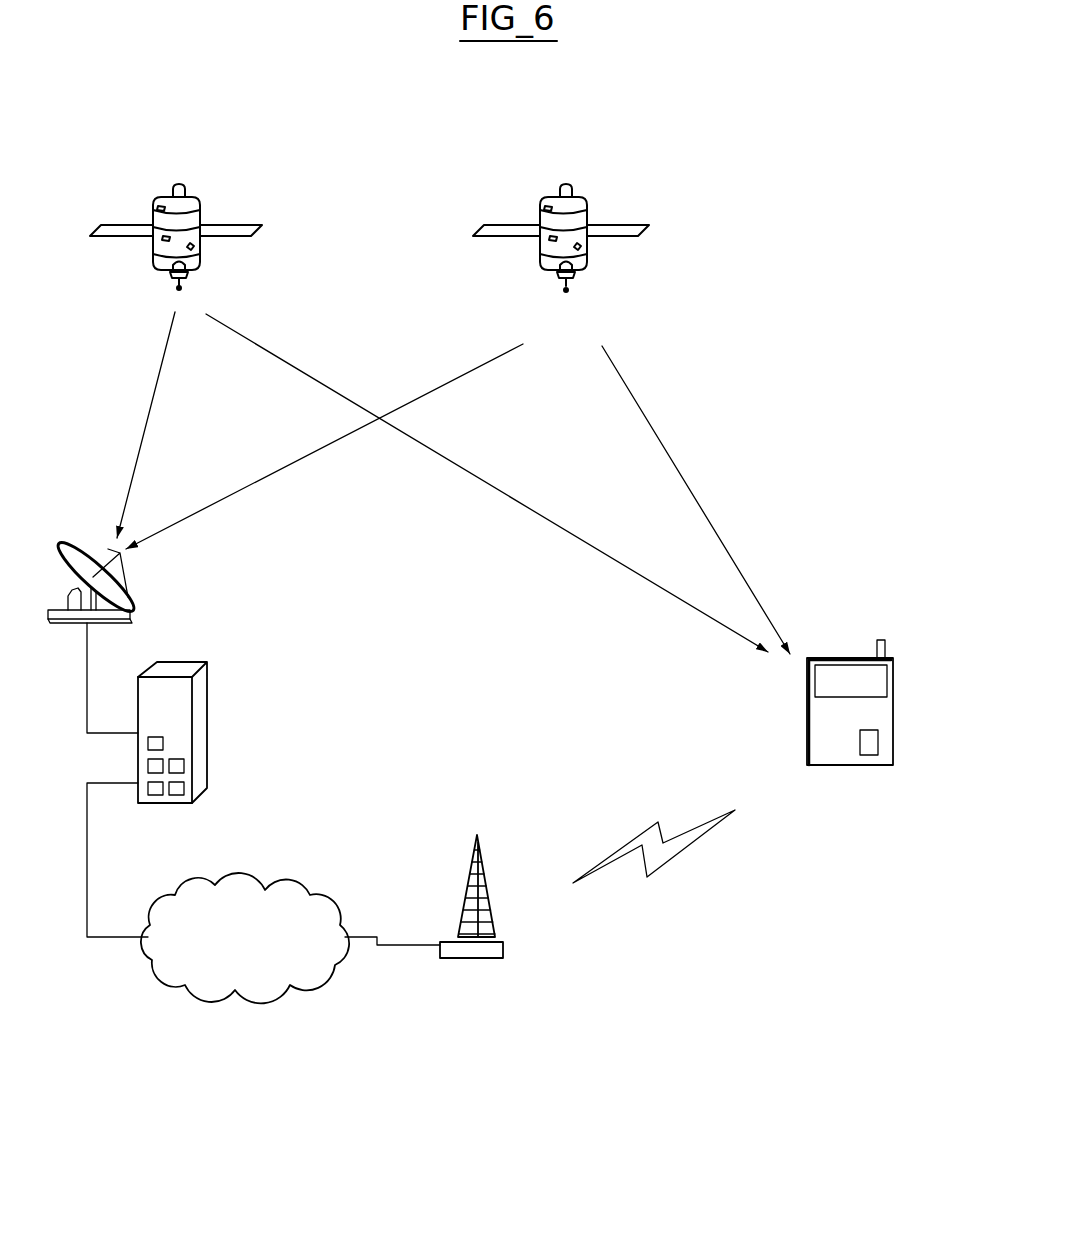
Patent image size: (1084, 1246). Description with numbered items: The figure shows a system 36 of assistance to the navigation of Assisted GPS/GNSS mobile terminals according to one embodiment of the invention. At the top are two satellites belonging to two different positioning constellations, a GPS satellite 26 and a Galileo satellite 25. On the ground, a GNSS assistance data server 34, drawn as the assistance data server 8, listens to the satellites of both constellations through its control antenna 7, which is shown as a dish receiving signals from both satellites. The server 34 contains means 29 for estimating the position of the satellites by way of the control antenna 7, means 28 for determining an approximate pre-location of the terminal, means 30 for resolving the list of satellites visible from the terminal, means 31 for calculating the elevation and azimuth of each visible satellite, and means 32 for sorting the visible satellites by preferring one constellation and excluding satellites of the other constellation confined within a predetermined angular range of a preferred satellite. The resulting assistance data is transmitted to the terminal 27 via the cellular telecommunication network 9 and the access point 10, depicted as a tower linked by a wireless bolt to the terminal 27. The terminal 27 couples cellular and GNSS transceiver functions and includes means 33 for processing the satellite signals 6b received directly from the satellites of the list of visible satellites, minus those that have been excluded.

The signal 6b is at (686, 478).
The control antenna 7 is at (130, 605).
The assistance data server 8 is at (176, 754).
The cellular telecommunication network 9 is at (252, 992).
The access point 10 is at (487, 880).
The Galileo satellite 25 is at (588, 210).
The GPS satellite 26 is at (200, 209).
The terminal 27 is at (885, 746).
The means for determining an approximate pre-location 28 is at (184, 767).
The means for estimating the position of the satellites 29 is at (148, 795).
The means for resolution of the list of visible satellites 30 is at (184, 795).
The means for calculation of elevation and azimuth 31 is at (148, 766).
The means for sorting the satellites 32 is at (163, 742).
The means for processing the satellite signals 33 is at (878, 740).
The GNSS assistance data server 34 is at (198, 655).
The system of assistance to the navigation 36 is at (543, 1085).